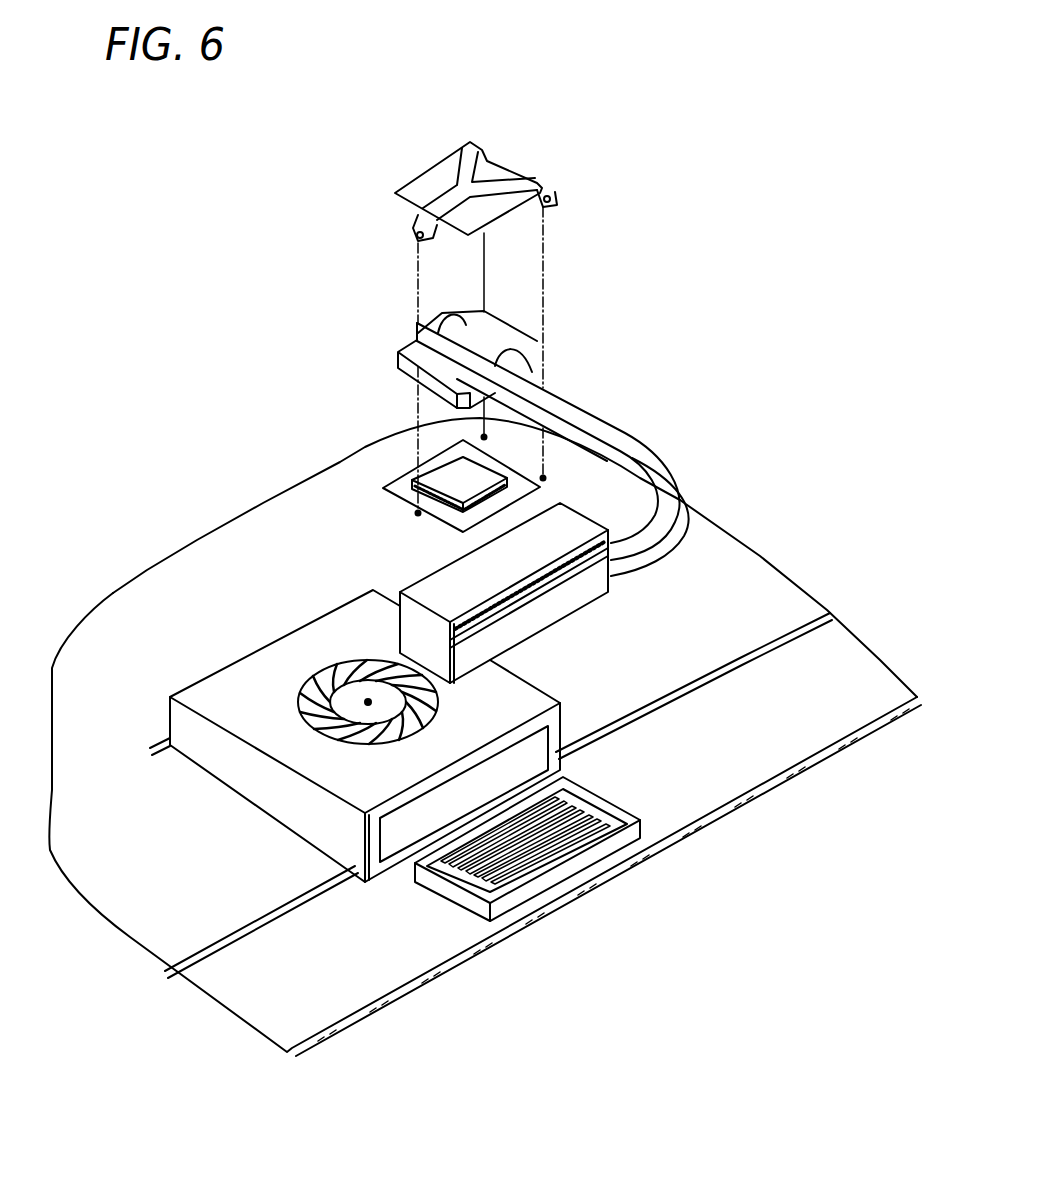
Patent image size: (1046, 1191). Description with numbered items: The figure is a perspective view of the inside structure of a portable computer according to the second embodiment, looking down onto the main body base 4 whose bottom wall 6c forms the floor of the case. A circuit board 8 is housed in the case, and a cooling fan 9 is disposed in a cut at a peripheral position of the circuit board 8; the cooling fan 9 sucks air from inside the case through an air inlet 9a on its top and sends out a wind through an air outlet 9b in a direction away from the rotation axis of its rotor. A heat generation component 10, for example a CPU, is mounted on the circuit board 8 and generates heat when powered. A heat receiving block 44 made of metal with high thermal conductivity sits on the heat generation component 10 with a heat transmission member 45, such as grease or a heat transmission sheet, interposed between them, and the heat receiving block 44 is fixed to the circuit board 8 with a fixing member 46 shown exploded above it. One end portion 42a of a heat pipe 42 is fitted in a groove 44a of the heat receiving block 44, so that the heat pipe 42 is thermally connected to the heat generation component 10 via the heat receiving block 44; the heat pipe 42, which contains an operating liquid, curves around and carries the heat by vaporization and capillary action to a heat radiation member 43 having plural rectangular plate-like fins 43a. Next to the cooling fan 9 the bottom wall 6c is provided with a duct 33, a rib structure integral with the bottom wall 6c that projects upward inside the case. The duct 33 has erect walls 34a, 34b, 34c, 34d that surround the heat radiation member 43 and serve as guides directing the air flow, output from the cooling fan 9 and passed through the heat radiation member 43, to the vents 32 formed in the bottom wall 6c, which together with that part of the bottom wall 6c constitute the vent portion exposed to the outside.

The main body base 4 is at (847, 683).
The bottom wall 6c is at (820, 745).
The circuit board 8 is at (485, 737).
The cooling fan 9 is at (365, 736).
The air inlet 9a is at (442, 695).
The air outlet 9b is at (418, 810).
The heat generation component 10 is at (417, 470).
The vents 32 is at (508, 847).
The duct 33 is at (560, 854).
The erect wall 34a is at (460, 905).
The erect wall 34b is at (563, 873).
The erect wall 34c is at (630, 808).
The erect wall 34d is at (590, 747).
The heat pipe 42 is at (553, 449).
The one end portion of the heat pipe 42a is at (543, 343).
The heat radiation member 43 is at (495, 593).
The fins 43a is at (550, 575).
The heat receiving block 44 is at (447, 348).
The groove 44a is at (440, 318).
The heat transmission member 45 is at (487, 481).
The fixing member 46 is at (497, 176).